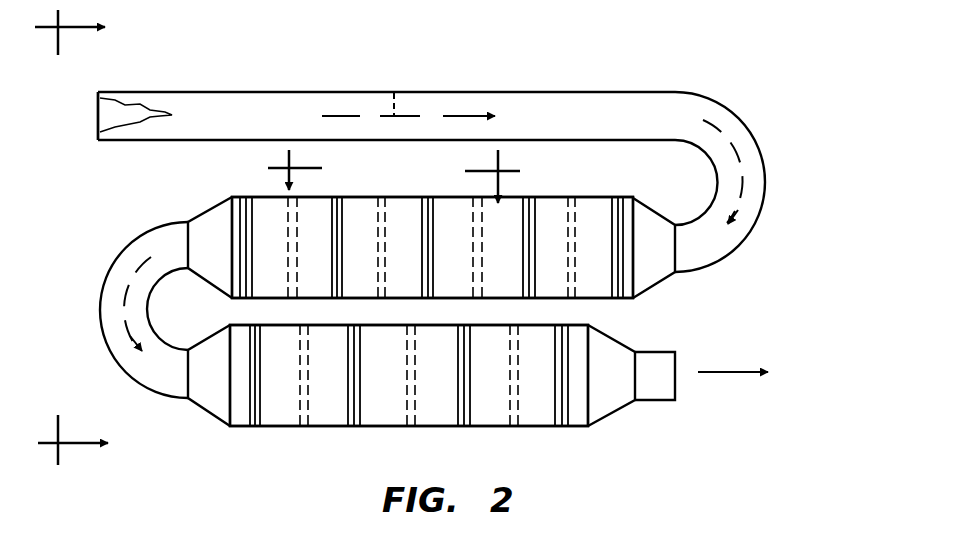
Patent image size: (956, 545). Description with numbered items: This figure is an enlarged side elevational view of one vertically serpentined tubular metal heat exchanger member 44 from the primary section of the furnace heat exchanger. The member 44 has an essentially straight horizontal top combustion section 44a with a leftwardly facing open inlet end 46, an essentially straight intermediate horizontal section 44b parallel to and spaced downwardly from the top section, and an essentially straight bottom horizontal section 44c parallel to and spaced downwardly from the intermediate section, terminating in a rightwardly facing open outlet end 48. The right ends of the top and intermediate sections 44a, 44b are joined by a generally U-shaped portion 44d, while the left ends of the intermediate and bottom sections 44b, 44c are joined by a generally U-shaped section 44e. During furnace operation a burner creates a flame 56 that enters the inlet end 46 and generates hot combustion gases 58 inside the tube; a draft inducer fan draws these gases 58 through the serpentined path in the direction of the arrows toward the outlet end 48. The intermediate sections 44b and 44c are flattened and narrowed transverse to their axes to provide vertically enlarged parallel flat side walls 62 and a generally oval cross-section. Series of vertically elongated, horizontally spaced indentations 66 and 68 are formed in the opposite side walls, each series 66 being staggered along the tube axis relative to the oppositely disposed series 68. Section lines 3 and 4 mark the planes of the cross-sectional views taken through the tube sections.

The section line 3- 3 is at (70, 237).
The section line 4- 4 is at (388, 173).
The tubular heat exchanger member 44 is at (510, 86).
The top combustion section 44a is at (329, 91).
The intermediate horizontal section 44b is at (622, 177).
The bottom horizontal section 44c is at (592, 428).
The U-shaped portion 44d is at (765, 158).
The U-shaped section 44e is at (113, 265).
The inlet end 46 is at (98, 115).
The outlet end 48 is at (676, 365).
The flame 56 is at (145, 100).
The hot combustion gases 58 is at (398, 90).
The flat side wall 62 is at (348, 215).
The indentations 66 is at (241, 298).
The indentations 68 is at (310, 303).